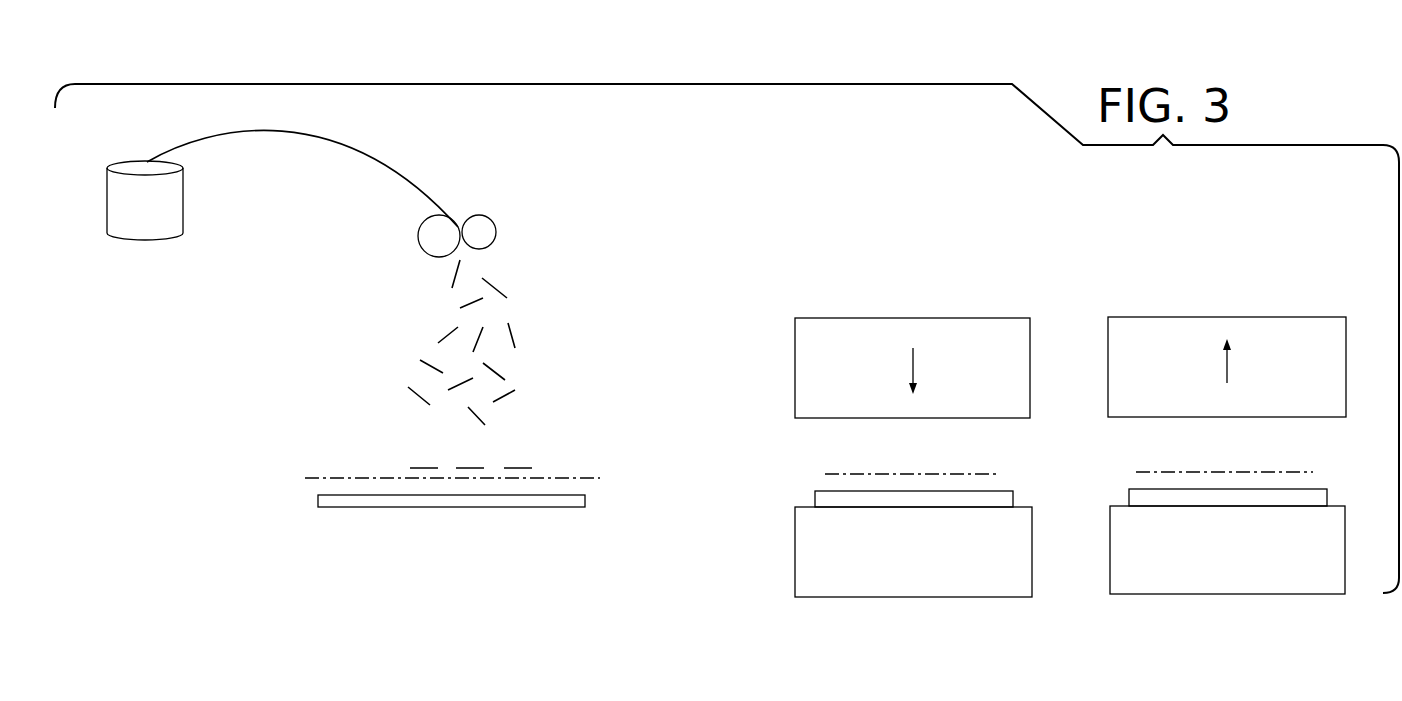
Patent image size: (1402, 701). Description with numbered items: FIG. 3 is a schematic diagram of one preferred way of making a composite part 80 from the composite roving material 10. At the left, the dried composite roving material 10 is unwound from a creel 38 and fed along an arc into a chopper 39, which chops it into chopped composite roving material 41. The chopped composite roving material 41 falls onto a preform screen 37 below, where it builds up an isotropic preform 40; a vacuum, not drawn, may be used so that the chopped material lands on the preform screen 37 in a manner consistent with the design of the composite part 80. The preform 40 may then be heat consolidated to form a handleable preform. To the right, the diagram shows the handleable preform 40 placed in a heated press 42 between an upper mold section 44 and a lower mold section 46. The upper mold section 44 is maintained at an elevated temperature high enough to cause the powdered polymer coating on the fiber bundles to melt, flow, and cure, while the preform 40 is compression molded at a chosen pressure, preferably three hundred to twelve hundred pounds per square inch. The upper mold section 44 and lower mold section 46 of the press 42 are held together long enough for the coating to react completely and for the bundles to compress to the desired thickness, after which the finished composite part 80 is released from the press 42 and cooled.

The composite roving material 10 is at (381, 132).
The preform screen 37 is at (462, 508).
The creel 38 is at (198, 203).
The chopper 39 is at (474, 200).
The preform 40 is at (360, 478).
The chopped composite roving material 41 is at (457, 328).
The heated press 42 is at (1054, 395).
The upper mold section 44 is at (868, 318).
The lower mold section 46 is at (810, 535).
The composite part 80 is at (1258, 472).